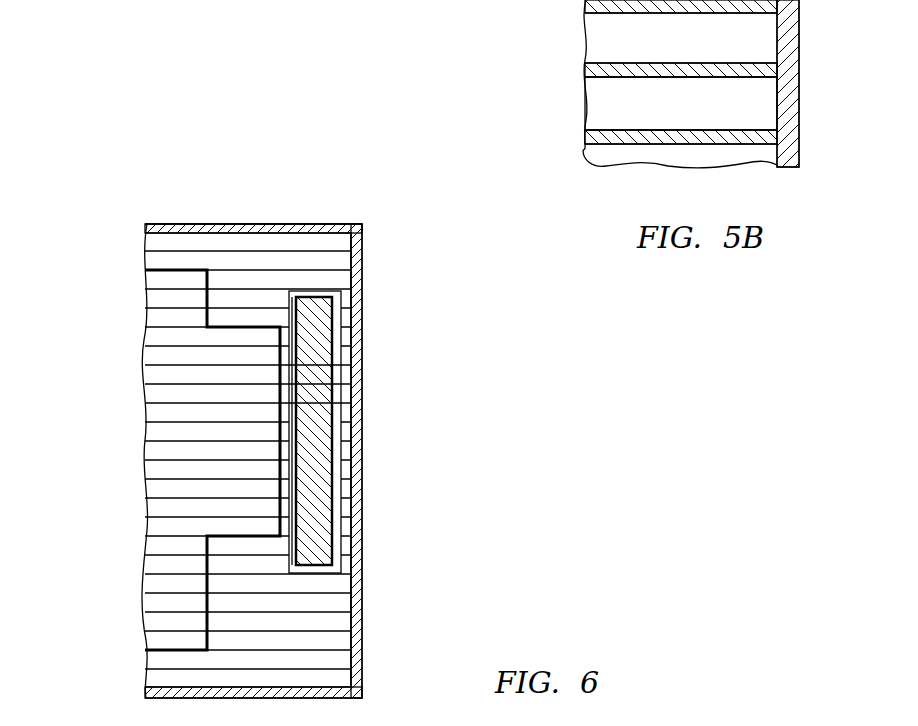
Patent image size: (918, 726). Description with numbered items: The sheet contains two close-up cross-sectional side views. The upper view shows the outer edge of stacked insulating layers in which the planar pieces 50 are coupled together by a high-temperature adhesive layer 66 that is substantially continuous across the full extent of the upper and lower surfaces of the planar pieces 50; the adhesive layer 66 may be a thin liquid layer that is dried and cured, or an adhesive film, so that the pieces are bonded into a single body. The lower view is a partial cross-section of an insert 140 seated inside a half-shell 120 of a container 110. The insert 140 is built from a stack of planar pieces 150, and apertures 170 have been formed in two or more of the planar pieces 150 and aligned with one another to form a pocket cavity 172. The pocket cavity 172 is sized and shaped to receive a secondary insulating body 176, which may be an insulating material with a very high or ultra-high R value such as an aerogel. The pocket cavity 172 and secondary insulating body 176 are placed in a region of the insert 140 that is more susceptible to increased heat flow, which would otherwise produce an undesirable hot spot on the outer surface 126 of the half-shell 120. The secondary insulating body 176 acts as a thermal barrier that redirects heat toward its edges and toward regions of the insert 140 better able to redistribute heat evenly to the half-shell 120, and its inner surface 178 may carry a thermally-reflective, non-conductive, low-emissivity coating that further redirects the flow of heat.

In FIG. 6, the container 110 is at (249, 195).
In FIG. 6, the half-shell 120 is at (362, 635).
In FIG. 6, the outer surface 126 is at (362, 318).
In FIG. 6, the insert 140 is at (125, 520).
In FIG. 6, the planar pieces 150 is at (167, 243).
In FIG. 6, the apertures 170 is at (288, 297).
In FIG. 6, the pocket cavity 172 is at (336, 470).
In FIG. 6, the secondary insulating body 176 is at (316, 384).
In FIG. 6, the inner surface 178 is at (298, 429).
In FIG. 5B, the adhesive layer 66 is at (598, 72).
In FIG. 5B, the planar pieces 50 is at (600, 108).